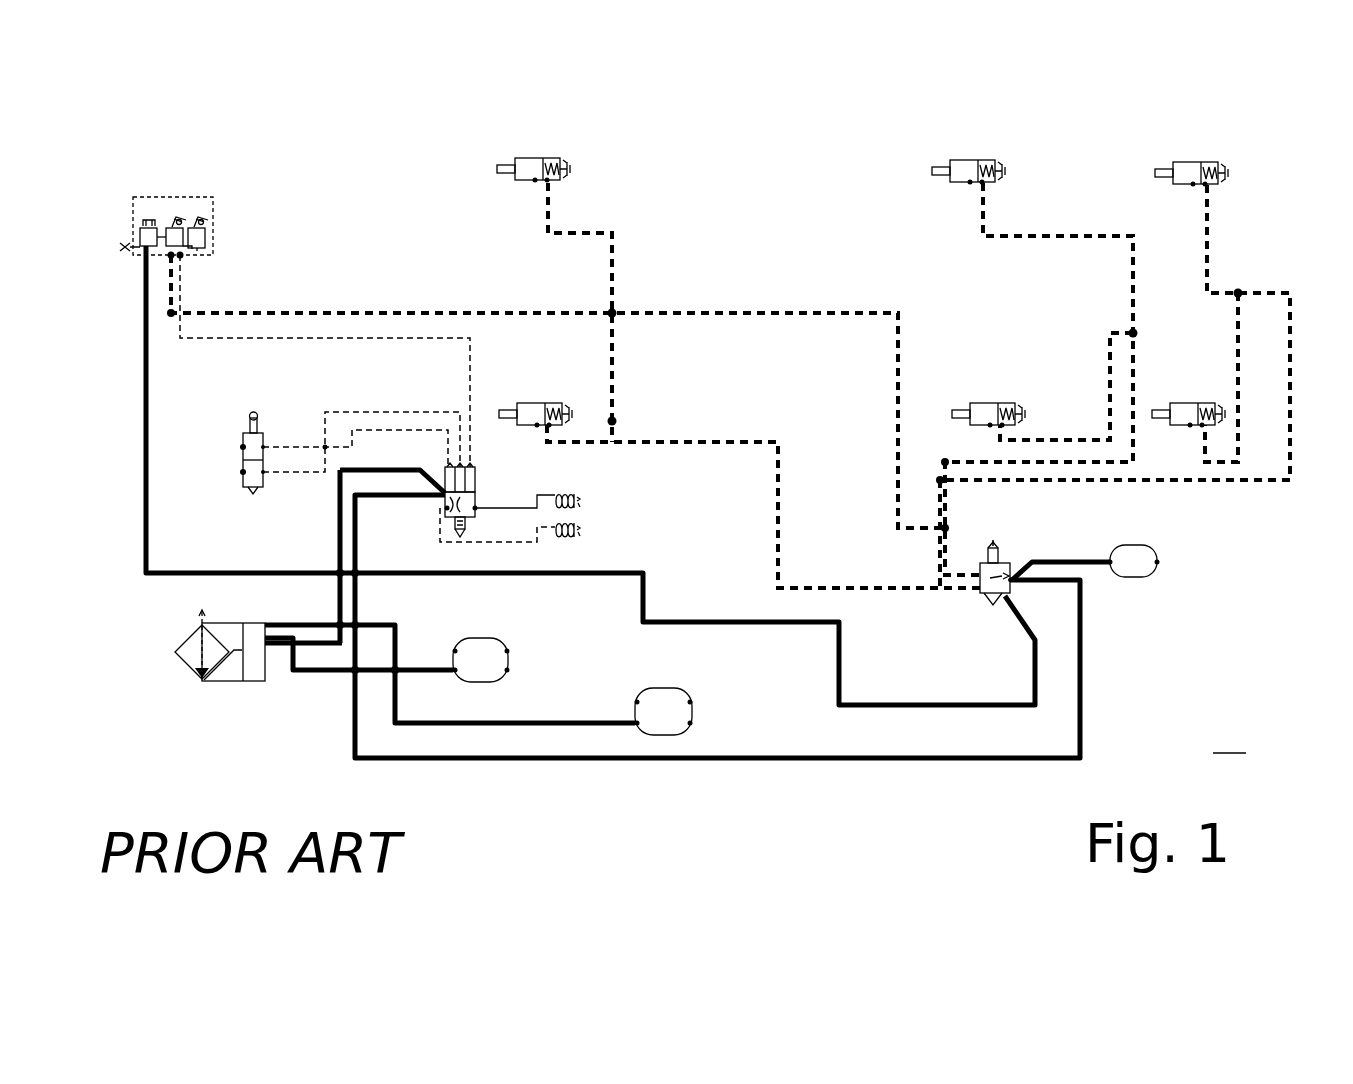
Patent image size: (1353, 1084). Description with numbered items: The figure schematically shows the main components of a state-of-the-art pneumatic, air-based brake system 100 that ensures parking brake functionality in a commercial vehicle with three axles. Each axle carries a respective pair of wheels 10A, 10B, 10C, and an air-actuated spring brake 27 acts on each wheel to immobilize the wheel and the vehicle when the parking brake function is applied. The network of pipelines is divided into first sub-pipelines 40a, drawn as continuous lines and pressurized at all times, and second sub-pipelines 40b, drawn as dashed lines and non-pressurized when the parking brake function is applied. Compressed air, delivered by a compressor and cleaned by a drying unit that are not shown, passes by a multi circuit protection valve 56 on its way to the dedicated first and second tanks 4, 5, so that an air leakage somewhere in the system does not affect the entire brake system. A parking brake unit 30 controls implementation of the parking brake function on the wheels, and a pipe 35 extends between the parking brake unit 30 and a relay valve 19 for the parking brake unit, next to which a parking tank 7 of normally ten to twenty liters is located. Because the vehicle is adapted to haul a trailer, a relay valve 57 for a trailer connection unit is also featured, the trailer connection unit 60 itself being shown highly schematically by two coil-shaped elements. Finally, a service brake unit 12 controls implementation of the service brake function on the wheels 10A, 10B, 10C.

The pneumatic brake system 100 is at (1229, 744).
The first tank 4 is at (510, 661).
The second tank 5 is at (694, 711).
The parking tank 7 is at (1158, 560).
The wheels 10A is at (525, 279).
The wheels 10B is at (966, 279).
The wheels 10C is at (1184, 280).
The service brake unit 12 is at (243, 460).
The relay valve for the parking brake unit 19 is at (1002, 543).
The air-actuated spring brake 27 is at (578, 155).
The parking brake unit 30 is at (214, 207).
The pipe 35 is at (910, 694).
The first sub-pipelines 40a is at (826, 735).
The second sub-pipelines 40b is at (432, 288).
The protection valve 56 is at (216, 685).
The relay valve for the trailer connection unit 57 is at (477, 474).
The trailer connection unit 60 is at (583, 513).